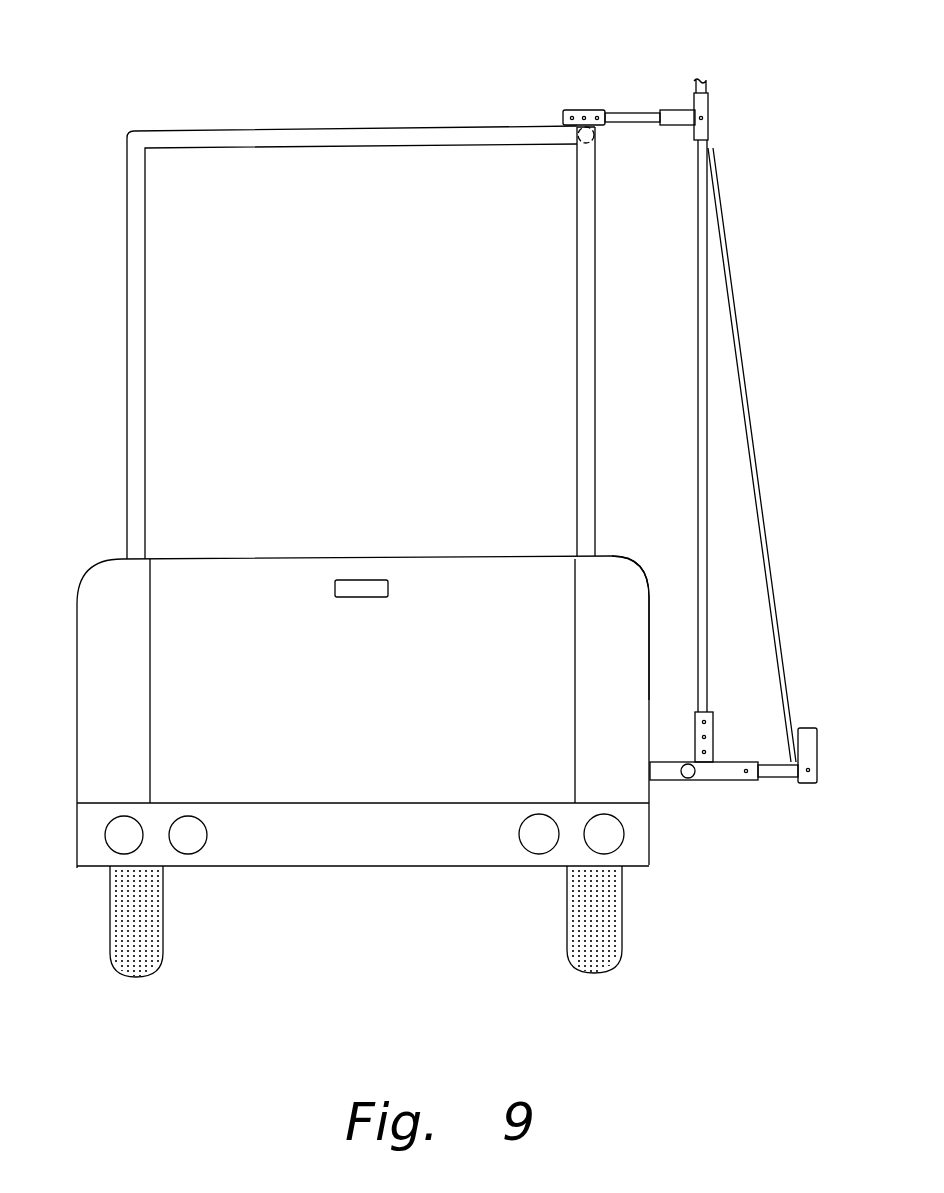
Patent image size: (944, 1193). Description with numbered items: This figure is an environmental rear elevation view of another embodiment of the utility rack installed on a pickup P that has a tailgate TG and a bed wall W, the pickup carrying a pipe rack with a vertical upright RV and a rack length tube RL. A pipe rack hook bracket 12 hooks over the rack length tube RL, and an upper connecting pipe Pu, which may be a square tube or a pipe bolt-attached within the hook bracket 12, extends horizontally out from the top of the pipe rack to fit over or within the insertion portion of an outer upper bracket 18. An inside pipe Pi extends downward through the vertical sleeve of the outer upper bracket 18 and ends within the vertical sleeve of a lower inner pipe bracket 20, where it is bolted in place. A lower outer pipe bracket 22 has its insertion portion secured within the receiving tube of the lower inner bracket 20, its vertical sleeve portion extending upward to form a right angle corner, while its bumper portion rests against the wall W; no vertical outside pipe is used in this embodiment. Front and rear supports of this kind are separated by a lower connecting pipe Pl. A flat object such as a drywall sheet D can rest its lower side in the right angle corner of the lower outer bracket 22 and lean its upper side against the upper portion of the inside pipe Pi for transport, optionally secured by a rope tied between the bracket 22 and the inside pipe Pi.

The pickup P is at (92, 562).
The tailgate TG is at (393, 703).
The bed wall W is at (650, 620).
The vertical rack rail RV is at (565, 320).
The rack length tube RL is at (612, 145).
The pipe rack hook bracket 12 is at (572, 98).
The upper connecting pipe Pu is at (625, 95).
The outer upper bracket 18 is at (724, 96).
The inside pipe Pi is at (716, 394).
The drywall sheet D is at (762, 507).
The lower inner pipe bracket 20 is at (718, 803).
The lower connecting pipe Pl is at (684, 801).
The lower outer pipe bracket 22 is at (783, 803).